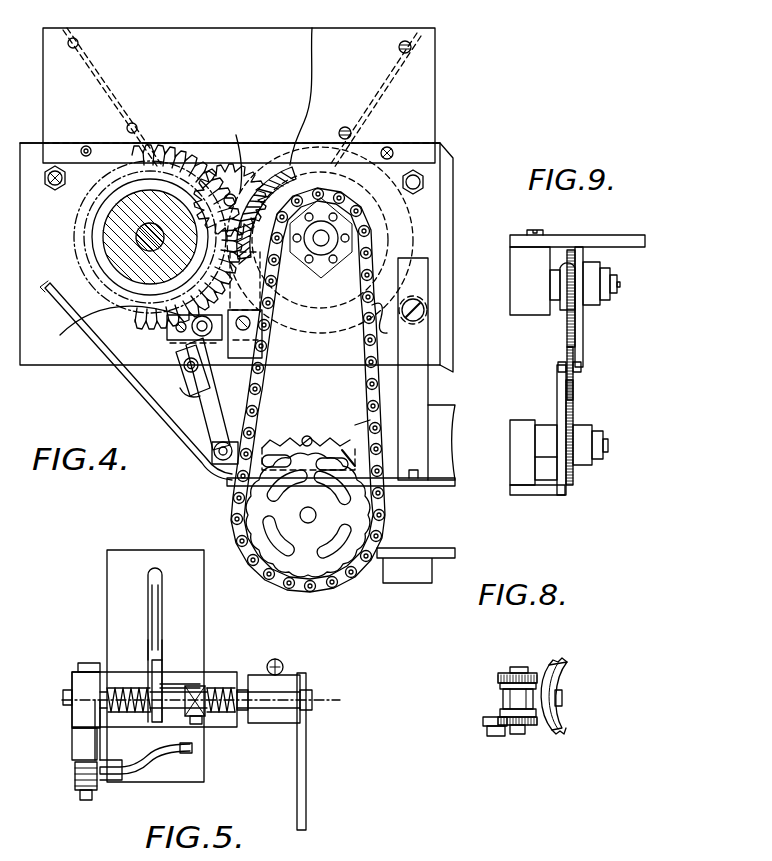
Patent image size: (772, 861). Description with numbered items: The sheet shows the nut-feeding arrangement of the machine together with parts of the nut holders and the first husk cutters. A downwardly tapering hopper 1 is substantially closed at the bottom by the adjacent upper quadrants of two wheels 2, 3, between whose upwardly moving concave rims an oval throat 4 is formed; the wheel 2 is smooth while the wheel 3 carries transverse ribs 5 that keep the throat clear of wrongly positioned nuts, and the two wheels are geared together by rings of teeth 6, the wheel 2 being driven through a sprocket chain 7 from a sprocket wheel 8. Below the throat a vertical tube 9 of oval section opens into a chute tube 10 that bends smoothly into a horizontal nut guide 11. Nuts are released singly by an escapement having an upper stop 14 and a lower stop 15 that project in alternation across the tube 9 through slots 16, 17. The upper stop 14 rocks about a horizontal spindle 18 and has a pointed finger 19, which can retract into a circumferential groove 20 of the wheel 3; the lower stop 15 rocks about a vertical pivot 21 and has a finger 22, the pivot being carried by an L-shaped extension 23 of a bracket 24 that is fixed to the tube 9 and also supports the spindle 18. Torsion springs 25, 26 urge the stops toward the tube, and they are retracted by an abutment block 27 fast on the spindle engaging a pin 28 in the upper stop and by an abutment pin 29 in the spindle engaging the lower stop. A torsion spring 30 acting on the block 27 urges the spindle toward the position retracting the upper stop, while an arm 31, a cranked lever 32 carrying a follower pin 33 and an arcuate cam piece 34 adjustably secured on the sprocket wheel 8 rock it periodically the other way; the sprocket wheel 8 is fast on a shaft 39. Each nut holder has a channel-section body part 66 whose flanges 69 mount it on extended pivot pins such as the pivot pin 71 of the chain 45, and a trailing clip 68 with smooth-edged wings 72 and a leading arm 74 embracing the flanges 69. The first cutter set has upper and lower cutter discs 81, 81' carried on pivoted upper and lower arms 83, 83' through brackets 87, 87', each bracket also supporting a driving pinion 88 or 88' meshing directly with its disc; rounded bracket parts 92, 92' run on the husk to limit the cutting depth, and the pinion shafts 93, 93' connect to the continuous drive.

In FIG. 4, the hopper 1 is at (95, 84).
In FIG. 4, the wheel 2 is at (392, 224).
In FIG. 4, the wheel 3 is at (120, 222).
In FIG. 4, the oval throat 4 is at (236, 135).
In FIG. 4, the transverse ribs 5 is at (185, 158).
In FIG. 4, the rings of teeth 6 is at (212, 170).
In FIG. 4, the sprocket chain 7 is at (373, 313).
In FIG. 4, the sprocket wheel 8 is at (370, 520).
In FIG. 4, the vertical tube 9 is at (232, 300).
In FIG. 5, the vertical tube 9 is at (110, 593).
In FIG. 4, the chute tube 10 is at (265, 440).
In FIG. 4, the horizontal nut guide 11 is at (440, 458).
In FIG. 4, the upper stop 14 is at (63, 333).
In FIG. 5, the upper stop 14 is at (148, 622).
In FIG. 4, the lower stop 15 is at (176, 350).
In FIG. 5, the lower stop 15 is at (123, 764).
In FIG. 5, the slot 16 is at (162, 576).
In FIG. 5, the slot 17 is at (180, 750).
In FIG. 4, the horizontal spindle 18 is at (172, 334).
In FIG. 5, the horizontal spindle 18 is at (78, 688).
In FIG. 4, the pointed finger 19 is at (106, 243).
In FIG. 5, the pointed finger 19 is at (152, 588).
In FIG. 4, the circumferential groove 20 is at (80, 265).
In FIG. 5, the vertical pivot 21 is at (82, 795).
In FIG. 5, the finger 22 is at (192, 749).
In FIG. 5, the L-shaped extension 23 is at (74, 740).
In FIG. 4, the bracket 24 is at (222, 335).
In FIG. 5, the bracket 24 is at (170, 680).
In FIG. 5, the torsion spring 25 is at (130, 688).
In FIG. 5, the torsion spring 26 is at (75, 776).
In FIG. 5, the abutment block 27 is at (198, 690).
In FIG. 5, the pin 28 is at (188, 685).
In FIG. 5, the abutment pin 29 is at (92, 730).
In FIG. 5, the torsion spring 30 is at (232, 714).
In FIG. 4, the arm 31 is at (180, 378).
In FIG. 5, the arm 31 is at (297, 783).
In FIG. 4, the cranked lever 32 is at (190, 400).
In FIG. 4, the follower pin 33 is at (315, 438).
In FIG. 4, the arcuate cam piece 34 is at (350, 435).
In FIG. 4, the shaft 39 is at (318, 515).
In FIG. 8, the chain 45 is at (503, 696).
In FIG. 8, the body part 66 is at (562, 700).
In FIG. 8, the trailing clip 68 is at (562, 681).
In FIG. 8, the flanges 69 is at (503, 683).
In FIG. 8, the pivot pin 71 is at (512, 737).
In FIG. 8, the wings 72 is at (568, 667).
In FIG. 8, the leading arm 74 is at (530, 672).
In FIG. 9, the upper cutter disc 81 is at (593, 299).
In FIG. 9, the lower cutter disc 81' is at (596, 374).
In FIG. 9, the upper arm 83 is at (577, 261).
In FIG. 9, the lower arm 83' is at (537, 473).
In FIG. 9, the bracket 87 is at (608, 307).
In FIG. 9, the bracket 87' is at (539, 430).
In FIG. 9, the driving pinion 88 is at (568, 258).
In FIG. 9, the driving pinion 88' is at (594, 438).
In FIG. 9, the bracket part 92 is at (597, 363).
In FIG. 9, the bracket part 92' is at (538, 365).
In FIG. 9, the shaft 93 is at (616, 283).
In FIG. 9, the shaft 93' is at (604, 438).